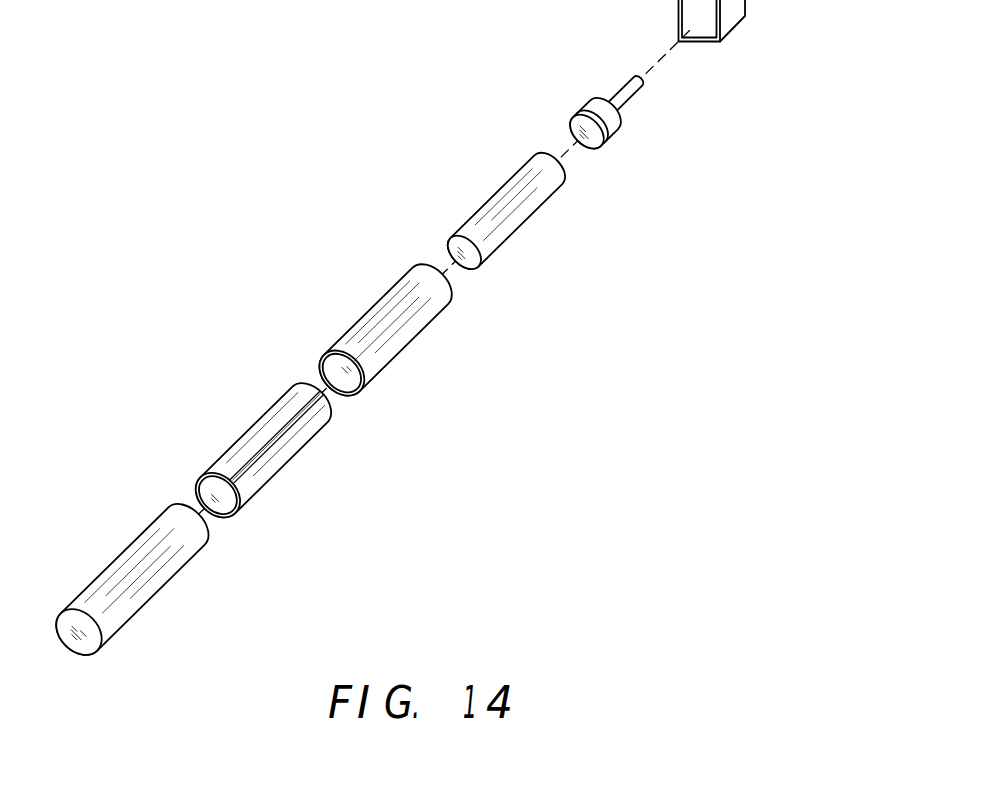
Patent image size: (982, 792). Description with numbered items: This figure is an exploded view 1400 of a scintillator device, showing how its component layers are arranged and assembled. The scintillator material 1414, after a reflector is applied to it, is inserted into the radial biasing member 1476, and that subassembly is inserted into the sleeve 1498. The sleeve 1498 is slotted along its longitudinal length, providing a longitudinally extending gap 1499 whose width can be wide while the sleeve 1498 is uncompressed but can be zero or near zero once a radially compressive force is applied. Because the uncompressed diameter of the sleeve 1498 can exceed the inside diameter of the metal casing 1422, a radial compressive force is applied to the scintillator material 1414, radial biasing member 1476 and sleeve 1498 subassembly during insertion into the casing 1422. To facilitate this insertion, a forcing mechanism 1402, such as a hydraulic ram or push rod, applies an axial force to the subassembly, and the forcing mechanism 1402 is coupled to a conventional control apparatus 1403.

The exploded view / scintillator device 1400 is at (398, 105).
The forcing mechanism 1402 is at (583, 104).
The control apparatus 1403 is at (737, 24).
The scintillator material 1414 is at (488, 202).
The radial biasing member 1476 is at (361, 314).
The sleeve 1498 is at (257, 421).
The longitudinally extending gap 1499 is at (253, 503).
The casing 1422 is at (130, 545).